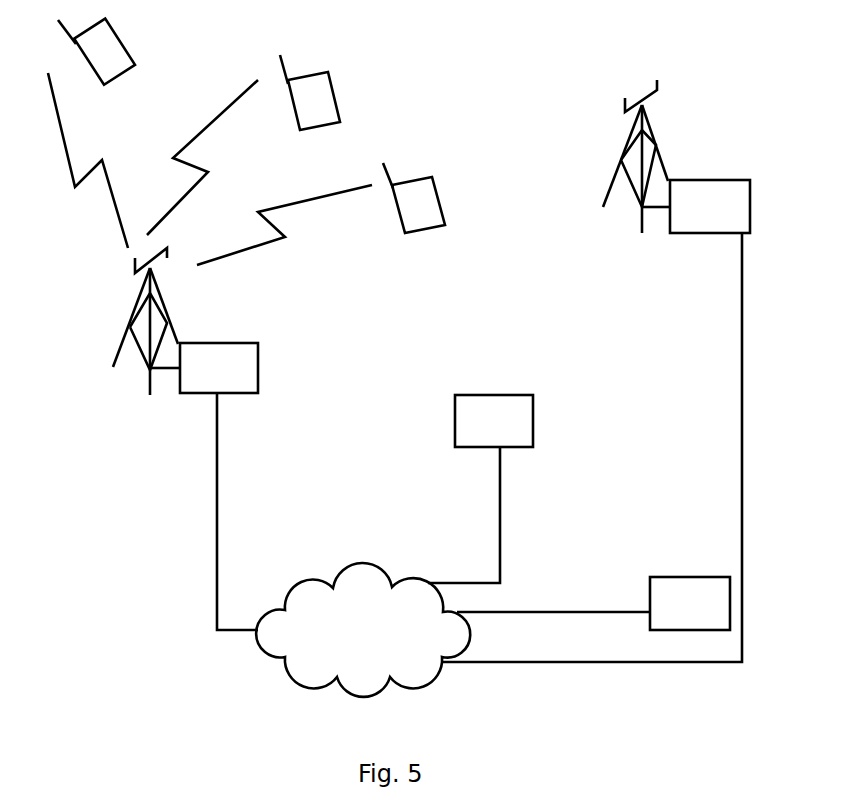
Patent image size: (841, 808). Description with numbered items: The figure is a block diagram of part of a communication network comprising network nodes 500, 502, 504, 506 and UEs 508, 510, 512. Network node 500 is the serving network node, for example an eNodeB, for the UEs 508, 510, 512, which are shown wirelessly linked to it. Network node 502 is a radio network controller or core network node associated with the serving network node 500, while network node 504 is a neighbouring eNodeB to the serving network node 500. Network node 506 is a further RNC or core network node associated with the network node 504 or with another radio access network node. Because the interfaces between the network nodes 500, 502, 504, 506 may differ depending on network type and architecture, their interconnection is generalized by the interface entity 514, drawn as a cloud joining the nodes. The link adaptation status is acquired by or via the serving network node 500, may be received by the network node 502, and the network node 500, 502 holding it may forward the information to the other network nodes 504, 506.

The network node 500 is at (238, 373).
The network node 502 is at (518, 407).
The network node 504 is at (687, 225).
The network node 506 is at (677, 617).
The UE 508 is at (107, 42).
The UE 510 is at (317, 93).
The UE 512 is at (422, 198).
The interface entity 514 is at (403, 668).